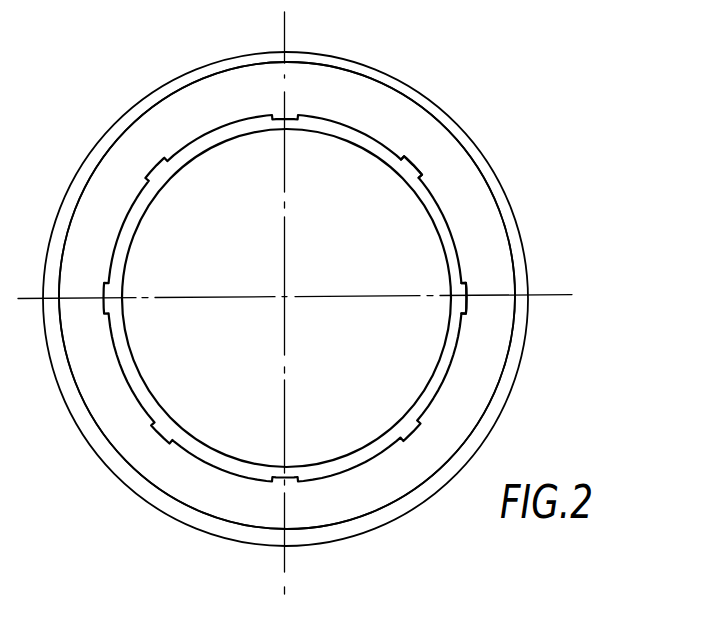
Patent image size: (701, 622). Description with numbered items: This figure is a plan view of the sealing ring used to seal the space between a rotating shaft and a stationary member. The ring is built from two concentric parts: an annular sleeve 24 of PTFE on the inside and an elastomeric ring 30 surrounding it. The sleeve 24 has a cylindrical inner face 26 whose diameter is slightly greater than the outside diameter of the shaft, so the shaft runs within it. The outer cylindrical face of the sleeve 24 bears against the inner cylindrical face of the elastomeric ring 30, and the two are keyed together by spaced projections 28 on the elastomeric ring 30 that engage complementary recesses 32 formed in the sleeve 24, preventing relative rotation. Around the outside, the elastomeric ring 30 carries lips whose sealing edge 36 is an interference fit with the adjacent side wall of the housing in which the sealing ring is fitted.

The annular sleeve 24 is at (347, 132).
The cylindrical inner face 26 is at (367, 151).
The spaced projections 28 is at (412, 167).
The elastomeric ring 30 is at (183, 117).
The complementary recesses 32 is at (456, 294).
The sealing edge 36 is at (230, 70).